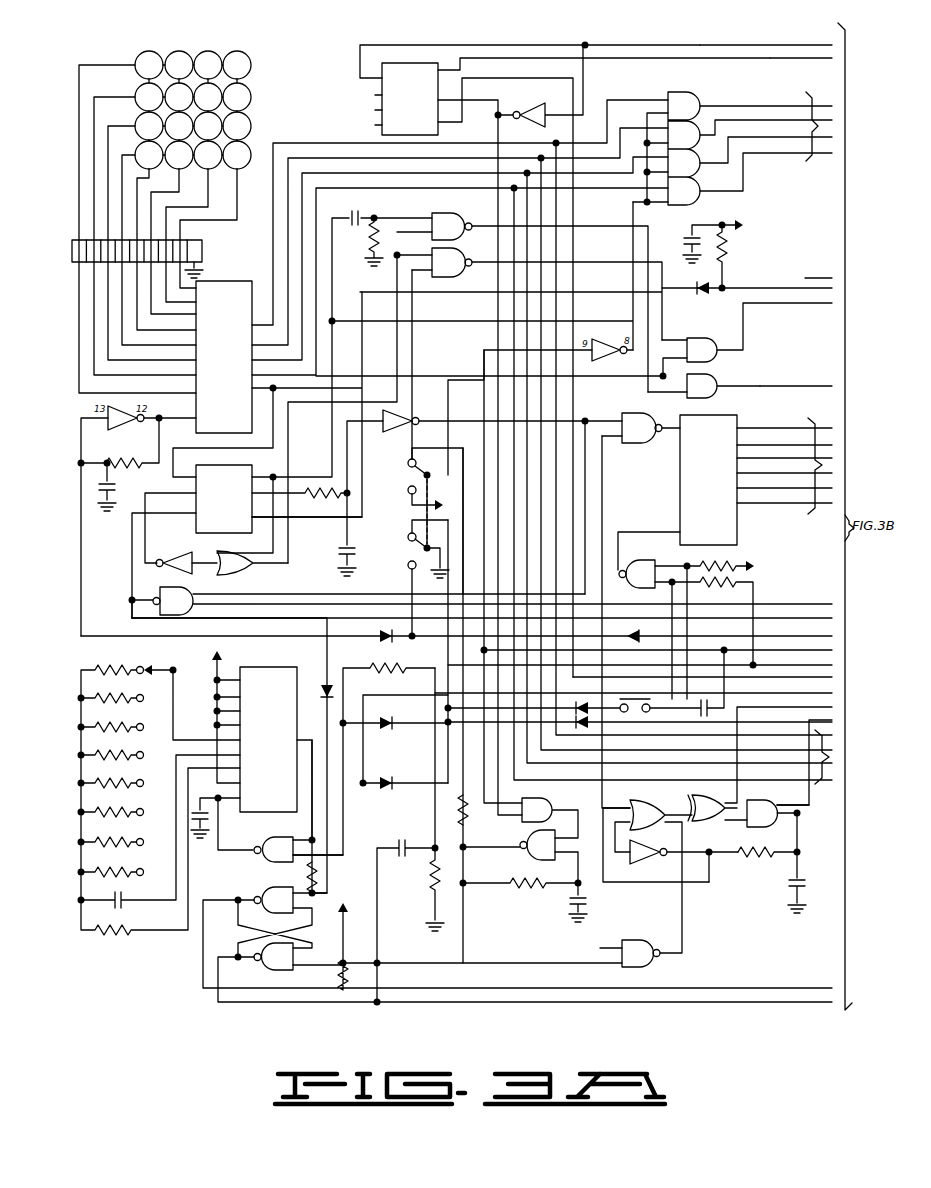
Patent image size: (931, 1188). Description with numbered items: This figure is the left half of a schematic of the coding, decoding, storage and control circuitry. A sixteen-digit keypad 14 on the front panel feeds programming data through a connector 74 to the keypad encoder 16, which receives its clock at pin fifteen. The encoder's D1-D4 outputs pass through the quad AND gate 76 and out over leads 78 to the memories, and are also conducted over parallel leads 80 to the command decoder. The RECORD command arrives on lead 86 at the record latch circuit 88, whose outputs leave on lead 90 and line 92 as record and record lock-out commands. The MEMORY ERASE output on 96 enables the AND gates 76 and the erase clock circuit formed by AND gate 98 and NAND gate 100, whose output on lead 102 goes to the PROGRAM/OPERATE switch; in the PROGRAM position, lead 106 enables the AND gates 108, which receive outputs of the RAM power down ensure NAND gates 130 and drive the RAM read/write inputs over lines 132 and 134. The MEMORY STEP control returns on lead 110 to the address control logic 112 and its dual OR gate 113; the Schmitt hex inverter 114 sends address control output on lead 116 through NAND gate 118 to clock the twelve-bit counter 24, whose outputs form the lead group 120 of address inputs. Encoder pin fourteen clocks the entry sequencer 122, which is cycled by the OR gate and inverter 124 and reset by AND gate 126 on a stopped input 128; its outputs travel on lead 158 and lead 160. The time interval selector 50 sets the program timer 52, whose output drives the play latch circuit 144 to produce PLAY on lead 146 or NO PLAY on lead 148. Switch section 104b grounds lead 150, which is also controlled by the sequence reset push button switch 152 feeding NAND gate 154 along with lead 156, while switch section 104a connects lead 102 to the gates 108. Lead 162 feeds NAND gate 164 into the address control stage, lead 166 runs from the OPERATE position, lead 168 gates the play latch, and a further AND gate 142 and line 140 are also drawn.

The keypad 14 is at (204, 48).
The connector 74 is at (205, 250).
The encoder 16 is at (232, 363).
The record latch circuit 88 is at (416, 114).
The lead 86 is at (500, 80).
The quad AND gate 76 is at (709, 85).
The leads 78 is at (818, 126).
The parallel leads 80 is at (503, 197).
The lead 90 is at (770, 58).
The line 92 is at (709, 45).
The NAND gates 130 is at (492, 289).
The lead 158 is at (832, 278).
The line 134 is at (832, 288).
The lead 160 is at (324, 440).
The AND gates 108 is at (770, 373).
The line 132 is at (832, 386).
The lead 106 is at (463, 375).
The lead 96 is at (478, 400).
The lead 102 is at (441, 438).
The NAND gate 118 is at (620, 448).
The counter 24 is at (718, 498).
The lead group 120 is at (823, 465).
The entry sequencer 122 is at (236, 510).
The OR gate and inverter 124 is at (231, 550).
The AND gate 126 is at (358, 608).
The stopped input lead 128 is at (343, 604).
The switch section 104a is at (407, 465).
The switch section 104b is at (406, 560).
The NAND gate 154 is at (682, 627).
The lead 162 is at (832, 618).
The lead 166 is at (832, 634).
The lead 156 is at (832, 665).
The lead 168 is at (358, 860).
The lead 110 is at (832, 707).
The line 140 is at (832, 720).
The sequence reset push button switch 152 is at (650, 712).
The lead 150 is at (410, 788).
The AND gate 98 is at (553, 795).
The NAND gate 100 is at (566, 866).
The time interval selector 50 is at (59, 806).
The program timer 52 is at (276, 752).
The play latch circuit 144 is at (252, 883).
The lead 146 is at (198, 968).
The lead 148 is at (204, 994).
The address control logic 112 is at (760, 879).
The dual OR gate 113 is at (720, 822).
The Schmitt hex inverter 114 is at (641, 862).
The lead 116 is at (635, 880).
The AND gate 142 is at (756, 800).
The NAND gate 164 is at (641, 895).